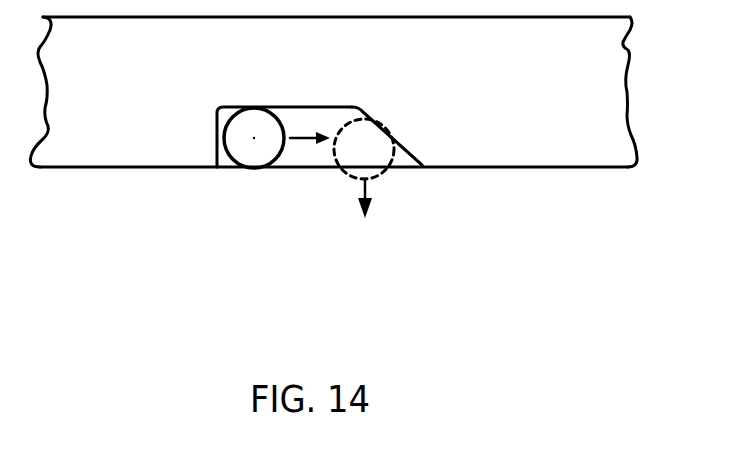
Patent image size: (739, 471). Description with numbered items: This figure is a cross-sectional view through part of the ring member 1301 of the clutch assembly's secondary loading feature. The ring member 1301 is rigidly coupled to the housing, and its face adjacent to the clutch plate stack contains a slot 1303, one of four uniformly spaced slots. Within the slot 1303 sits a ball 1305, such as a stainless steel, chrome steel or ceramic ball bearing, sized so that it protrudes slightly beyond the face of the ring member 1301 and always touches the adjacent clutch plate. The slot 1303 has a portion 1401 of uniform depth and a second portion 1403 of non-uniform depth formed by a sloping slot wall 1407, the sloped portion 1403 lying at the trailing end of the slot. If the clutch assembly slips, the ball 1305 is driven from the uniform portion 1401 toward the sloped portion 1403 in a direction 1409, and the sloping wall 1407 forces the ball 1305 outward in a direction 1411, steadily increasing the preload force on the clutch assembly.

The ring member 1301 is at (565, 58).
The slot 1303 is at (282, 162).
The ball 1305 is at (254, 138).
The uniform portion 1401 is at (360, 106).
The sloped portion 1403 is at (424, 163).
The sloping slot wall 1407 is at (413, 156).
The direction of ball movement 1409 is at (299, 140).
The outward direction 1411 is at (368, 192).